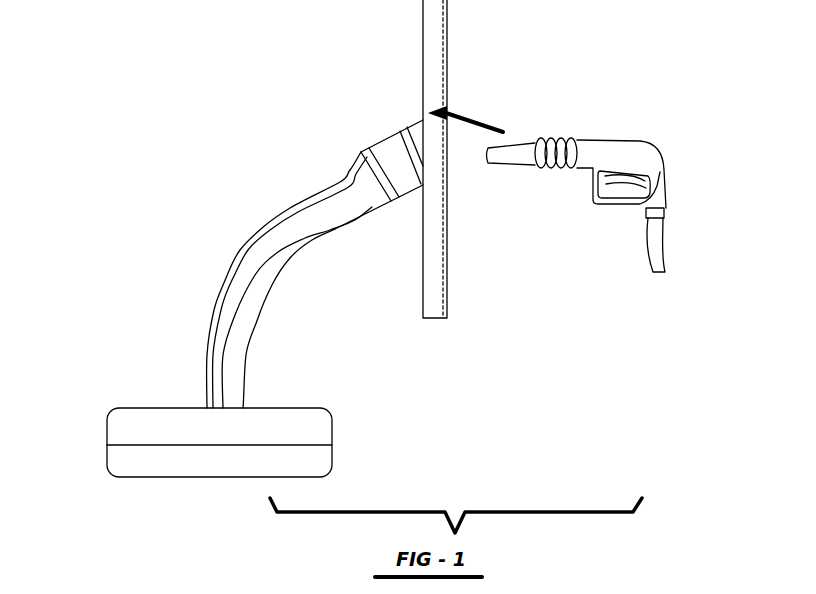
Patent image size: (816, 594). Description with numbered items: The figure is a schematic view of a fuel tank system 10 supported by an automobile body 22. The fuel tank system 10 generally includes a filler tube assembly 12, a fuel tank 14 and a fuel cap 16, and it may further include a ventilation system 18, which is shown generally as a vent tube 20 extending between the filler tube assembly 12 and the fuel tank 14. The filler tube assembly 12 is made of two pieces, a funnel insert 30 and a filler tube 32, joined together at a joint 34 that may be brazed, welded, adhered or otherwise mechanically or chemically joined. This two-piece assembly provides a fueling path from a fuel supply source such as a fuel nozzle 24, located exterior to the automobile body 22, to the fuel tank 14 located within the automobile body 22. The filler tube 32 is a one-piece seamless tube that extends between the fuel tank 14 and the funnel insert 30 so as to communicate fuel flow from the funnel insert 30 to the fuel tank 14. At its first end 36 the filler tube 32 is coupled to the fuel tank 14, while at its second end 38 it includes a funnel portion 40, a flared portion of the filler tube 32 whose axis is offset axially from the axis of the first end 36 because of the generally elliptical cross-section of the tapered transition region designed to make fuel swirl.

The fuel tank system 10 is at (384, 447).
The filler tube assembly 12 is at (388, 275).
The fuel tank 14 is at (131, 401).
The fuel cap 16 is at (436, 167).
The ventilation system 18 is at (215, 281).
The vent tube 20 is at (245, 234).
The automobile body 22 is at (455, 56).
The fuel nozzle 24 is at (584, 167).
The funnel insert 30 is at (381, 158).
The filler tube 32 is at (335, 241).
The joint 34 is at (395, 192).
The first end 36 is at (207, 404).
The second end 38 is at (355, 164).
The funnel portion 40 is at (367, 186).